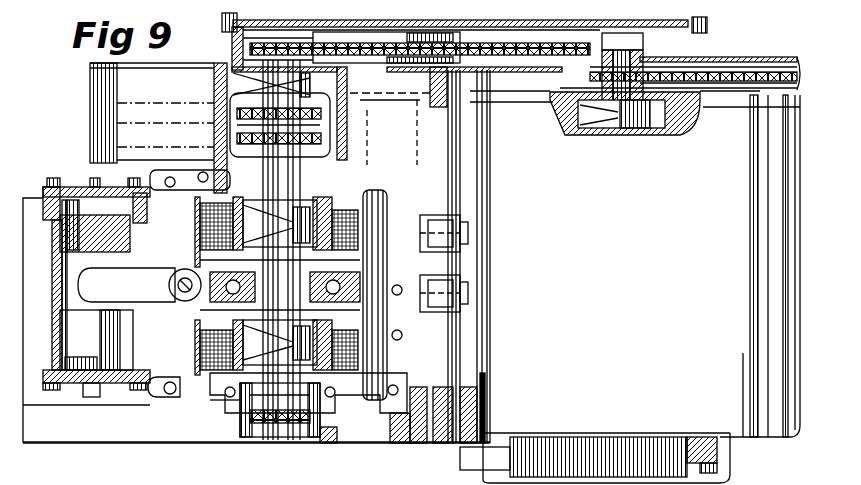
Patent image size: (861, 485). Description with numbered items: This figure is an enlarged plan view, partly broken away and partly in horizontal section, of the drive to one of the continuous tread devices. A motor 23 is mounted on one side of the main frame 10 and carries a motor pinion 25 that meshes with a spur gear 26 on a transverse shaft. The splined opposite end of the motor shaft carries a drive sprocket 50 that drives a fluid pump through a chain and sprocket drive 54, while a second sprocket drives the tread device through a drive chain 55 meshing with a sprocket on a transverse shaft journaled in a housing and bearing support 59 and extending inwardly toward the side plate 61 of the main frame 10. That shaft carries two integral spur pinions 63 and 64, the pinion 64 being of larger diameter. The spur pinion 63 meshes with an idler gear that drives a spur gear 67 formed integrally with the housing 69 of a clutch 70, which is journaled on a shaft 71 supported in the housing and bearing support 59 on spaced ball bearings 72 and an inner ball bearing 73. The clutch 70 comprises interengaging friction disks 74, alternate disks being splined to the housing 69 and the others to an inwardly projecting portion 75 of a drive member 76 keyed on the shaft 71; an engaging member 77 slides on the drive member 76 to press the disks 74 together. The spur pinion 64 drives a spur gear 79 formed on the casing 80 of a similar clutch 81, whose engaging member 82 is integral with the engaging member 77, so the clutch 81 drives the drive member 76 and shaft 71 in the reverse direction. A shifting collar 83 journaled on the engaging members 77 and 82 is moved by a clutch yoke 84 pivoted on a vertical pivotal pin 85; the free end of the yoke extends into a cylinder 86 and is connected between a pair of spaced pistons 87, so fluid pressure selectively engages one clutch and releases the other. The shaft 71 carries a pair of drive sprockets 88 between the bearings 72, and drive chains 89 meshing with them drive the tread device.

The main frame 10 is at (165, 444).
The motor 23 is at (765, 438).
The motor pinion 25 is at (665, 437).
The spur gear 26 is at (560, 427).
The drive sprocket 50 is at (668, 103).
The chain and sprocket drive 54 is at (700, 70).
The drive chain 55 is at (525, 72).
The housing and bearing support 59 is at (190, 405).
The side plate 61 is at (100, 442).
The spur pinion 63 is at (380, 250).
The spur pinion 64 is at (440, 345).
The spur gear 67 is at (112, 152).
The housing 69 is at (362, 190).
The clutch 70 is at (200, 162).
The shaft 71 is at (272, 410).
The ball bearing 72 is at (243, 84).
The ball bearing 73 is at (285, 423).
The friction disk 74 is at (365, 215).
The inwardly projecting portion 75 is at (440, 272).
The drive member 76 is at (62, 258).
The engaging member 77 is at (425, 232).
The spur gear 79 is at (162, 397).
The casing 80 is at (62, 270).
The clutch 81 is at (197, 395).
The engaging member 82 is at (440, 318).
The shifting collar 83 is at (122, 333).
The clutch yoke 84 is at (62, 323).
The vertical pivotal pin 85 is at (178, 284).
The cylinder 86 is at (62, 287).
The piston 87 is at (80, 188).
The drive sprocket 88 is at (352, 145).
The drive chain 89 is at (240, 115).